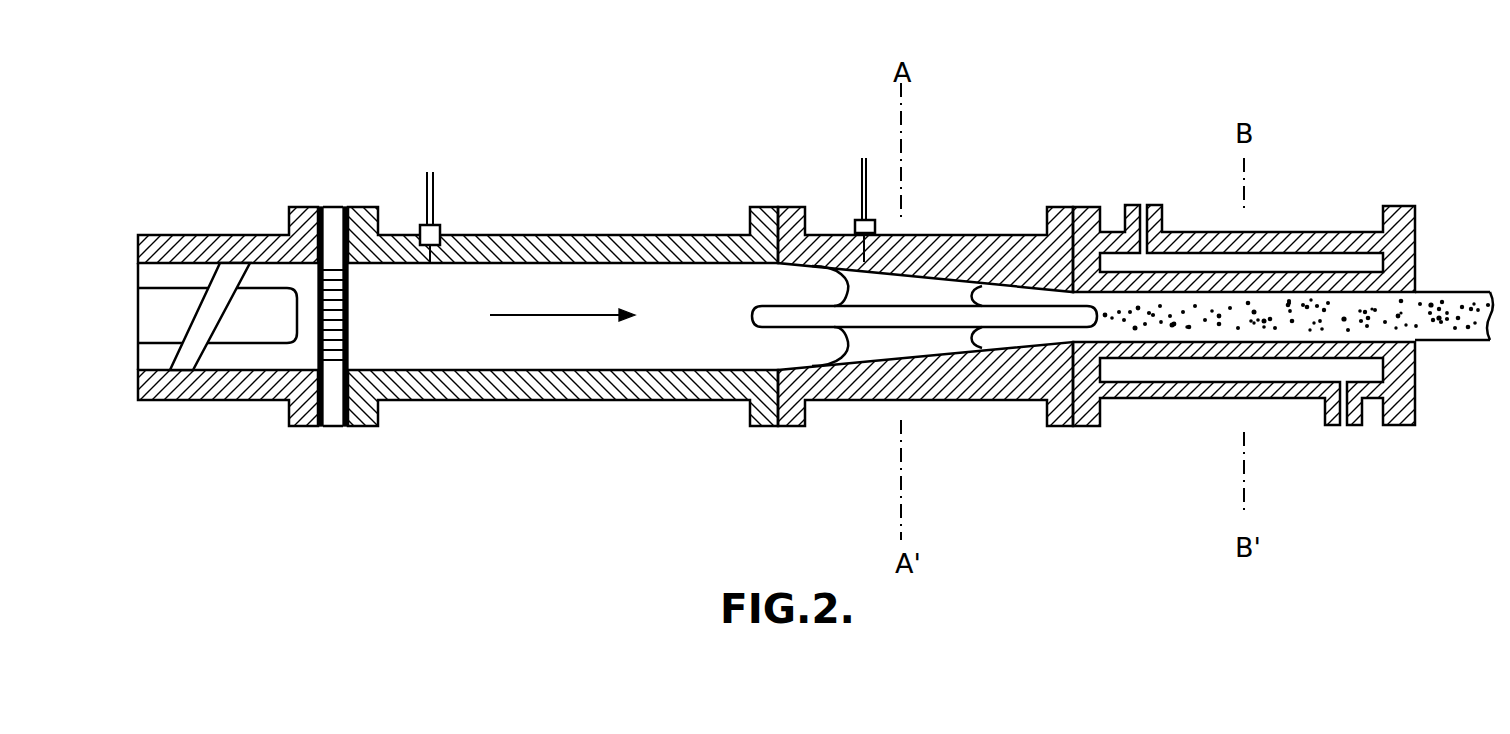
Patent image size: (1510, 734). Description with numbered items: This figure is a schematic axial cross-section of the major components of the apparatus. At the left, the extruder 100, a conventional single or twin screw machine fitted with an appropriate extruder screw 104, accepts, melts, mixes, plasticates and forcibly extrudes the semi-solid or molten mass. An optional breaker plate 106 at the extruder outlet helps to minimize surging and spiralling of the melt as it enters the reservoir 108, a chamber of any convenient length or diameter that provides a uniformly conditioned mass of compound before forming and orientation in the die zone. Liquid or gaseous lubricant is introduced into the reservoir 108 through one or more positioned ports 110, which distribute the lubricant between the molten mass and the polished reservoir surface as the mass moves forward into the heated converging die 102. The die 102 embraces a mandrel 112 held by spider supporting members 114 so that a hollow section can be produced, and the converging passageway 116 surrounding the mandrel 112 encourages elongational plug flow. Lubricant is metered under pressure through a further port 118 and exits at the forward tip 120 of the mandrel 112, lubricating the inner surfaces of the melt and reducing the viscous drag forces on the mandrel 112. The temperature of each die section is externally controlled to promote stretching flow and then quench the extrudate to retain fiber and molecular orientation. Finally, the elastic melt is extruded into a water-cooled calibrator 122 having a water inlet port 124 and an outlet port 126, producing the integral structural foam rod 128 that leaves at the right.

The extruder 100 is at (237, 400).
The heated converging die 102 is at (976, 232).
The extruder screw 104 is at (212, 280).
The breaker plate 106 is at (331, 207).
The reservoir 108 is at (597, 232).
The lubricant port 110 is at (431, 158).
The mandrel 112 is at (933, 343).
The spider supporting members 114 is at (868, 327).
The converging passageway 116 is at (1018, 292).
The lubricant port 118 is at (864, 90).
The forward tip of mandrel 120 is at (1092, 313).
The water-cooled calibrator 122 is at (1333, 232).
The water inlet port 124 is at (1343, 452).
The water outlet port 126 is at (1142, 120).
The integral structural foam rod 128 is at (1348, 297).